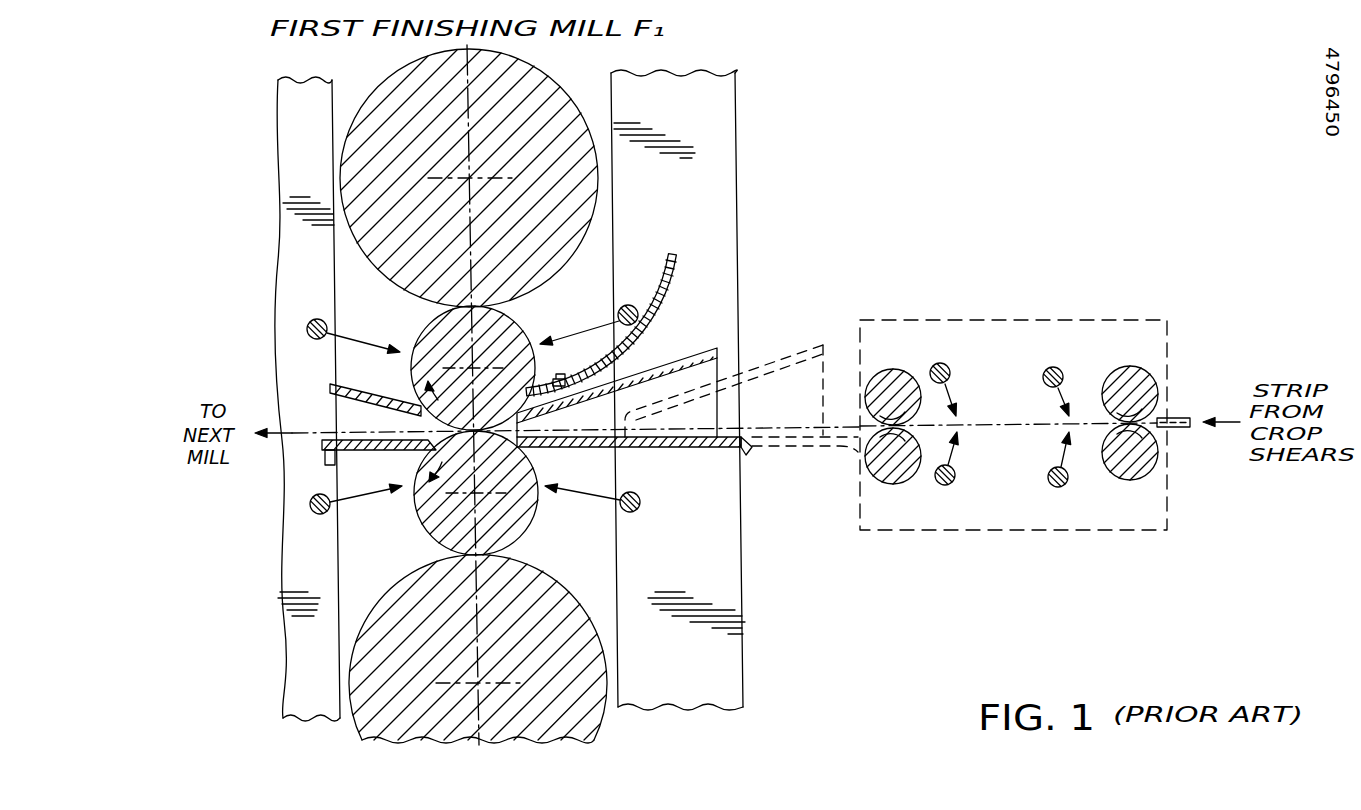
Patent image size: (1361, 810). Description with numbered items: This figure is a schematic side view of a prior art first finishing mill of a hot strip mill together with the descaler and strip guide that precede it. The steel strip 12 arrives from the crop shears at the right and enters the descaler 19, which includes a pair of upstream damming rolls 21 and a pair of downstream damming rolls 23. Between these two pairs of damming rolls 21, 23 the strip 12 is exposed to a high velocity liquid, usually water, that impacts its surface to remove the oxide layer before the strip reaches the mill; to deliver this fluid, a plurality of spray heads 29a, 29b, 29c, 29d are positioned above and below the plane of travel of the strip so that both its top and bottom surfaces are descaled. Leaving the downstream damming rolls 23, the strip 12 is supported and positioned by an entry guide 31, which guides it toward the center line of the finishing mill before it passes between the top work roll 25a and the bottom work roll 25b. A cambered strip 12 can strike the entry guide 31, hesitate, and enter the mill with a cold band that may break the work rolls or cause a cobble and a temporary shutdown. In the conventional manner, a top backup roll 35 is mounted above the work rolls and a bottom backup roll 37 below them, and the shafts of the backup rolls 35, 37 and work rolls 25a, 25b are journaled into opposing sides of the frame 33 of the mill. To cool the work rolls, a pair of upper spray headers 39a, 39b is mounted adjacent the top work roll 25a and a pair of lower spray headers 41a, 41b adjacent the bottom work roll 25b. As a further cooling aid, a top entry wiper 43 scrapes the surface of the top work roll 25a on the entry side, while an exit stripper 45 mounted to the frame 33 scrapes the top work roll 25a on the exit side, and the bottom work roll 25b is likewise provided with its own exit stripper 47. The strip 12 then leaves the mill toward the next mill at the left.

The steel strip 12 is at (1190, 428).
The descaler 19 is at (1013, 415).
The upstream damming rolls 21 is at (1128, 366).
The downstream damming rolls 23 is at (891, 366).
The top work roll 25a is at (526, 330).
The bottom work roll 25b is at (438, 530).
The spray head 29a is at (944, 363).
The spray head 29b is at (1047, 367).
The spray head 29c is at (939, 486).
The spray head 29d is at (1052, 489).
The entry guide 31 is at (720, 345).
The frame 33 is at (735, 122).
The top backup roll 35 is at (614, 185).
The bottom backup roll 37 is at (595, 596).
The upper spray header 39a is at (630, 305).
The upper spray header 39b is at (310, 321).
The lower spray header 41a is at (640, 508).
The lower spray header 41b is at (316, 514).
The top entry wiper 43 is at (676, 258).
The exit stripper 45 is at (369, 370).
The exit stripper 47 is at (390, 453).